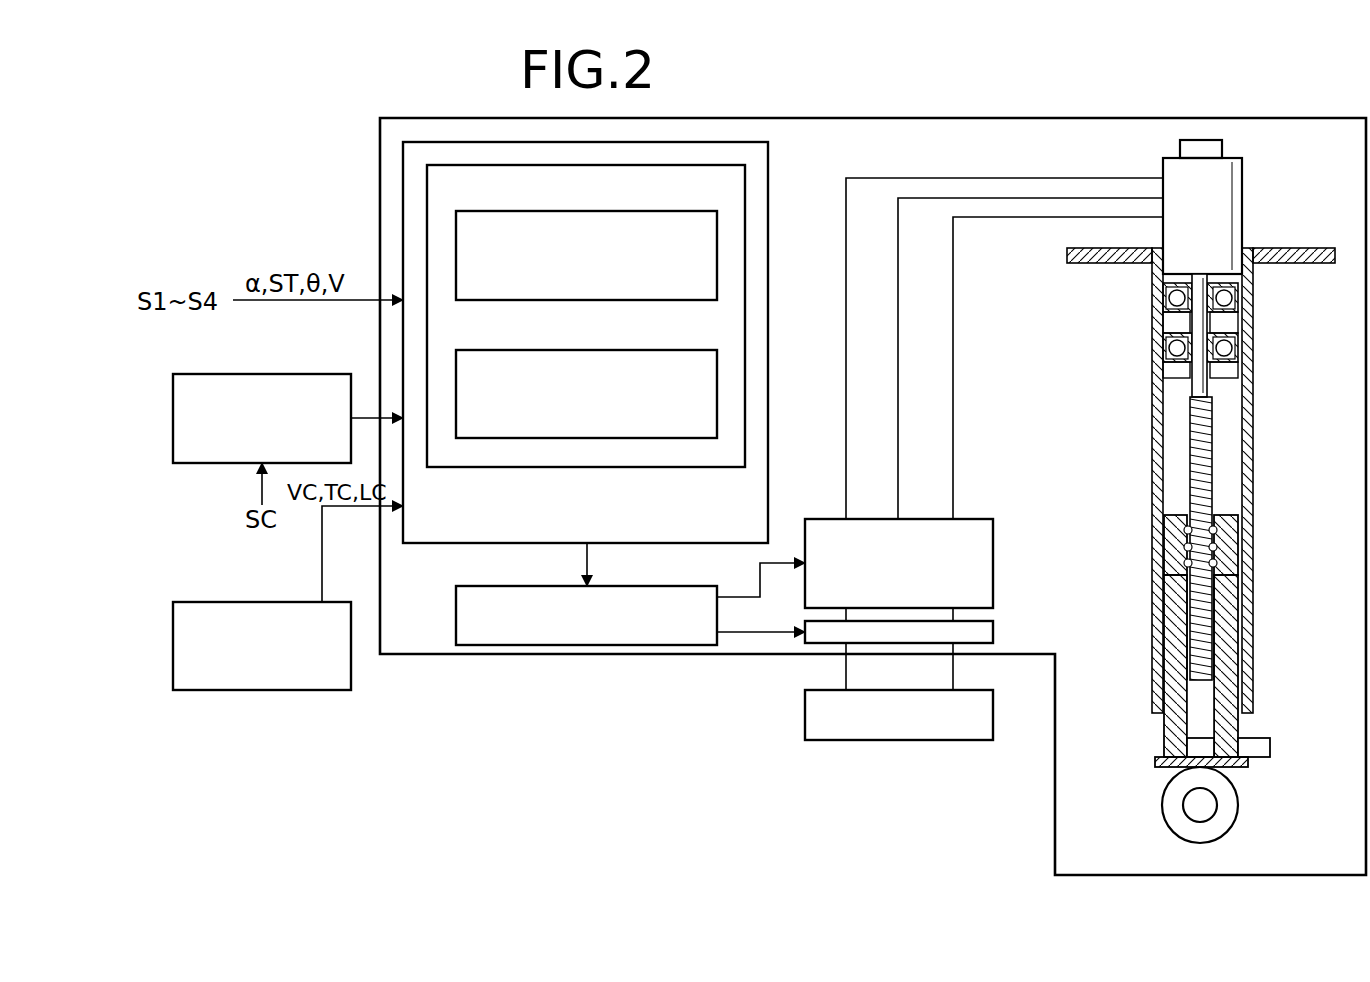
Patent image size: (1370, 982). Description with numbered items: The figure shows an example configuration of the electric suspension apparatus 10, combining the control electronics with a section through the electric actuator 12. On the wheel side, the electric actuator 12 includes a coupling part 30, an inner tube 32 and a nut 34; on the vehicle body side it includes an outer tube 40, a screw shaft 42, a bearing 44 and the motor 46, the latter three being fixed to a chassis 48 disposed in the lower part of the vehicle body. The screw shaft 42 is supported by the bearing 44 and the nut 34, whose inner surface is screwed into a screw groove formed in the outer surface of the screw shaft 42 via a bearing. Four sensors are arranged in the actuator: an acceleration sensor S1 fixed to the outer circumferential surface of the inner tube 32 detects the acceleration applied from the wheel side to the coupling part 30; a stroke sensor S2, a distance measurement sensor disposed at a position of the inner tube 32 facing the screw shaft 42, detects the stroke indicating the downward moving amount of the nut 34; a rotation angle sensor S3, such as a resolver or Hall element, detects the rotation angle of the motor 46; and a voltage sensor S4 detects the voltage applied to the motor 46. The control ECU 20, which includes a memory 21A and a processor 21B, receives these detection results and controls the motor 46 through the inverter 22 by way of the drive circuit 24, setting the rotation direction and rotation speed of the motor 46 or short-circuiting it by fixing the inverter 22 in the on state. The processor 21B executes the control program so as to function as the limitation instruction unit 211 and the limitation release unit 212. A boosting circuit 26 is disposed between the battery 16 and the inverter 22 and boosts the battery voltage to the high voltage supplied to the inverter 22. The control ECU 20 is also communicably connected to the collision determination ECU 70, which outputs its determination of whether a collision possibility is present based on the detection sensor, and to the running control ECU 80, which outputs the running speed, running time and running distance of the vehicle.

The vehicle suspension control system 10 is at (875, 118).
The electric actuator 12 is at (1275, 530).
The battery 16 is at (805, 705).
The control ECU 20 is at (520, 339).
The memory 21A is at (403, 165).
The processor 21B is at (427, 240).
The limitation instruction unit 211 is at (572, 211).
The limitation release unit 212 is at (572, 350).
The inverter 22 is at (975, 519).
The drive circuit 24 is at (456, 628).
The boosting circuit 26 is at (993, 632).
The coupling part 30 is at (1228, 810).
The inner tube 32 is at (1170, 748).
The nut 34 is at (1170, 530).
The outer tube 40 is at (1253, 645).
The screw shaft 42 is at (1205, 625).
The bearing 44 is at (1225, 298).
The motor 46 is at (1245, 160).
The chassis 48 is at (1305, 248).
The collision determination ECU 70 is at (213, 373).
The running control ECU 80 is at (213, 601).
The acceleration sensor S1 is at (1255, 748).
The stroke sensor S2 is at (1200, 746).
The rotation angle sensor S3 is at (1211, 95).
The voltage sensor S4 is at (1195, 148).